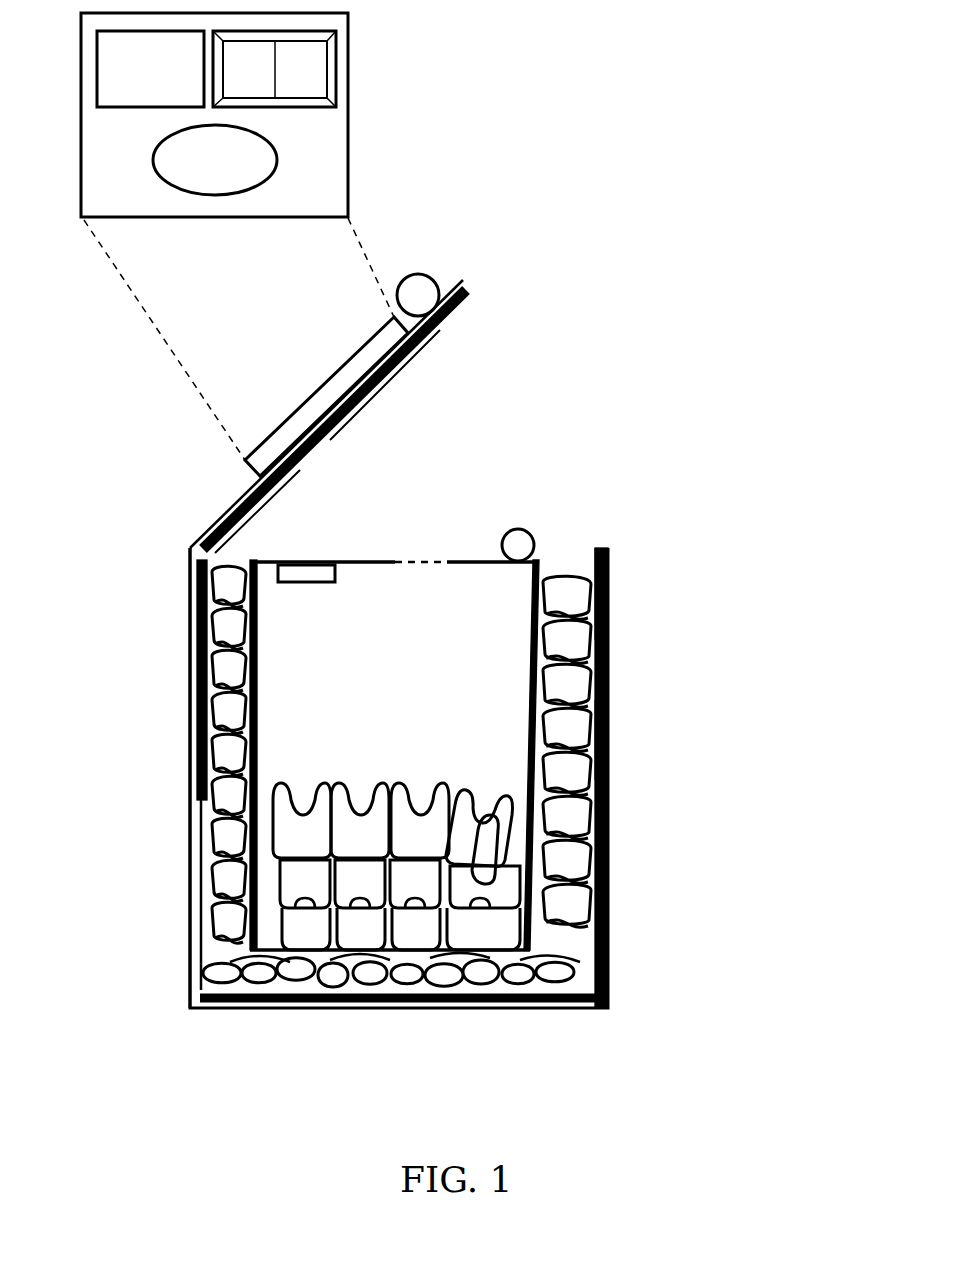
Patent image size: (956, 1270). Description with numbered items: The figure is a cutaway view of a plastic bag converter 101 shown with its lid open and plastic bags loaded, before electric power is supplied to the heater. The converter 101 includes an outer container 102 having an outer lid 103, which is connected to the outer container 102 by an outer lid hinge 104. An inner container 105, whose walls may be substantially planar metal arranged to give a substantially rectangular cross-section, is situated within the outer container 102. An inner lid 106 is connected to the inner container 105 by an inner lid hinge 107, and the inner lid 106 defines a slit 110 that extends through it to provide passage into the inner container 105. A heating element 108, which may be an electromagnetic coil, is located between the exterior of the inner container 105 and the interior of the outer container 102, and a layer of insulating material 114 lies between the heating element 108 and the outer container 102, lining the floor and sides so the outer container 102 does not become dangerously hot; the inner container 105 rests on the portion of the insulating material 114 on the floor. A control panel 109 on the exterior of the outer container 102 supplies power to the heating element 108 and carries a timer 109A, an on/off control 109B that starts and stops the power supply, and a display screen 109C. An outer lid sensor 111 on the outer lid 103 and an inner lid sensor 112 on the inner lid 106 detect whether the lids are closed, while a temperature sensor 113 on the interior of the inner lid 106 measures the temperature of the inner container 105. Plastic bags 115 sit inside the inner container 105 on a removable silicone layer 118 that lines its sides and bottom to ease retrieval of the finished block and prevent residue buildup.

The plastic bag converter 101 is at (612, 625).
The outer container 102 is at (612, 547).
The outer lid 103 is at (456, 278).
The outer lid hinge 104 is at (190, 548).
The inner container 105 is at (541, 575).
The inner lid 106 is at (385, 558).
The inner lid hinge 107 is at (255, 558).
The heating element 108 is at (610, 735).
The control panel 109 is at (337, 362).
The timer 109A is at (137, 108).
The on/off control 109B is at (280, 108).
The display screen 109C is at (167, 195).
The slit 110 is at (418, 557).
The outer lid sensor 111 is at (416, 273).
The inner lid sensor 112 is at (518, 528).
The temperature sensor 113 is at (302, 588).
The insulating material 114 is at (583, 977).
The plastic bags 115 is at (415, 780).
The silicone layer 118 is at (520, 917).